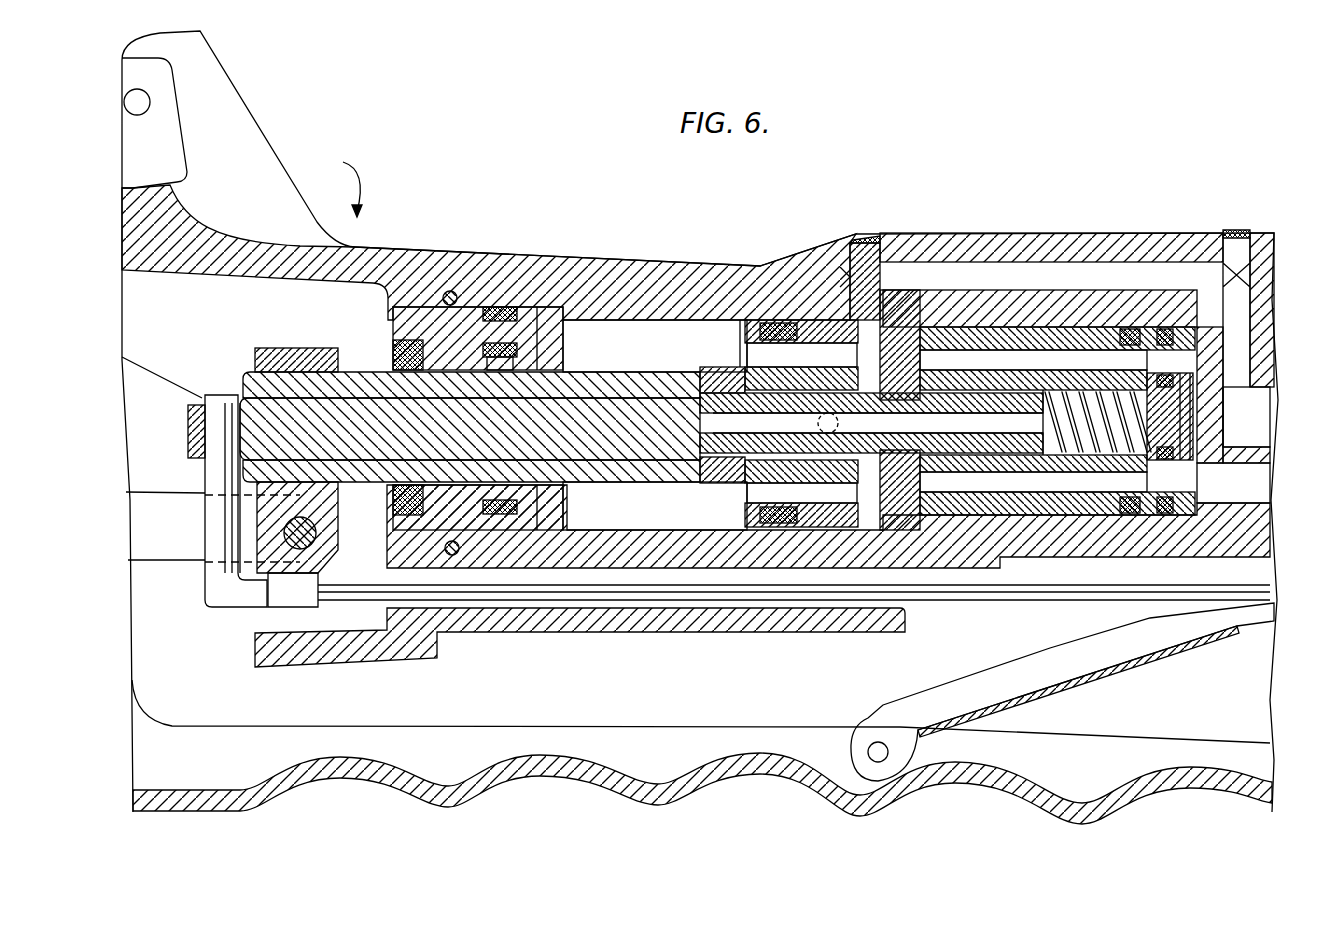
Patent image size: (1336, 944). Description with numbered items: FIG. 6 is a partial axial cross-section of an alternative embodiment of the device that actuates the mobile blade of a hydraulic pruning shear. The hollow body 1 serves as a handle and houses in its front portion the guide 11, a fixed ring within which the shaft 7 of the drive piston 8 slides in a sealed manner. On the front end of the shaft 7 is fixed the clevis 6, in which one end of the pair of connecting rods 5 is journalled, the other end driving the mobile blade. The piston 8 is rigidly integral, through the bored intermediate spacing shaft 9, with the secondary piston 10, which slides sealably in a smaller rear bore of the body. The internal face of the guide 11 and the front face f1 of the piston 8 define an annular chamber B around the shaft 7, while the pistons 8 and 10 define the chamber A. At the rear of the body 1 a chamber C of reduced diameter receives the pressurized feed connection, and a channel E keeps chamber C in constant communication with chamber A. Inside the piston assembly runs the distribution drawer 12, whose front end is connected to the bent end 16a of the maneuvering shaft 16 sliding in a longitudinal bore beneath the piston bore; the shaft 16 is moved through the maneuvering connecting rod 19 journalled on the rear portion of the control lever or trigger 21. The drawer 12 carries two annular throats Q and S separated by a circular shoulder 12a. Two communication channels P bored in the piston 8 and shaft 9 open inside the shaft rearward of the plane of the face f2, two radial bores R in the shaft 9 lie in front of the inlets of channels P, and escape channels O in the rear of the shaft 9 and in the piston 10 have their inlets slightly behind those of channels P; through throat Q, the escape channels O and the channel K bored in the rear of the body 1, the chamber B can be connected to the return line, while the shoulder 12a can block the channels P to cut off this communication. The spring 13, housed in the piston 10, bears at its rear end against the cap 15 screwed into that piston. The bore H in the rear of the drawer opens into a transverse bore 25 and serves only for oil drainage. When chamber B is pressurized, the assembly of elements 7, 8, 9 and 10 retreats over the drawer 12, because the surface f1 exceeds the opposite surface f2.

The hollow body 1 is at (344, 184).
The connecting rods 5 is at (157, 543).
The clevis 6 is at (262, 555).
The shaft 7 is at (537, 383).
The drive piston 8 is at (757, 330).
The intermediate spacing shaft 9 is at (928, 343).
The secondary piston 10 is at (1027, 333).
The guide 11 is at (420, 320).
The drawer 12 is at (470, 420).
The circular shoulder 12a is at (818, 328).
The spring 13 is at (1095, 385).
The cap 15 is at (1157, 433).
The maneuvering shaft 16 is at (337, 593).
The bent end 16a is at (220, 547).
The maneuvering connecting rod 19 is at (967, 687).
The control lever or trigger 21 is at (397, 773).
The transverse bore 25 is at (703, 407).
The chamber A is at (985, 357).
The annular chamber B is at (620, 340).
The inlet chamber C is at (1245, 407).
The channel E is at (1105, 272).
The bore H is at (723, 420).
The channel K is at (1240, 483).
The escape channels O is at (1023, 333).
The communication channels P is at (797, 353).
The annular throat Q is at (920, 387).
The radial bores R is at (828, 410).
The annular throat S is at (867, 380).
The front face f1 is at (728, 327).
The face f2 is at (830, 330).